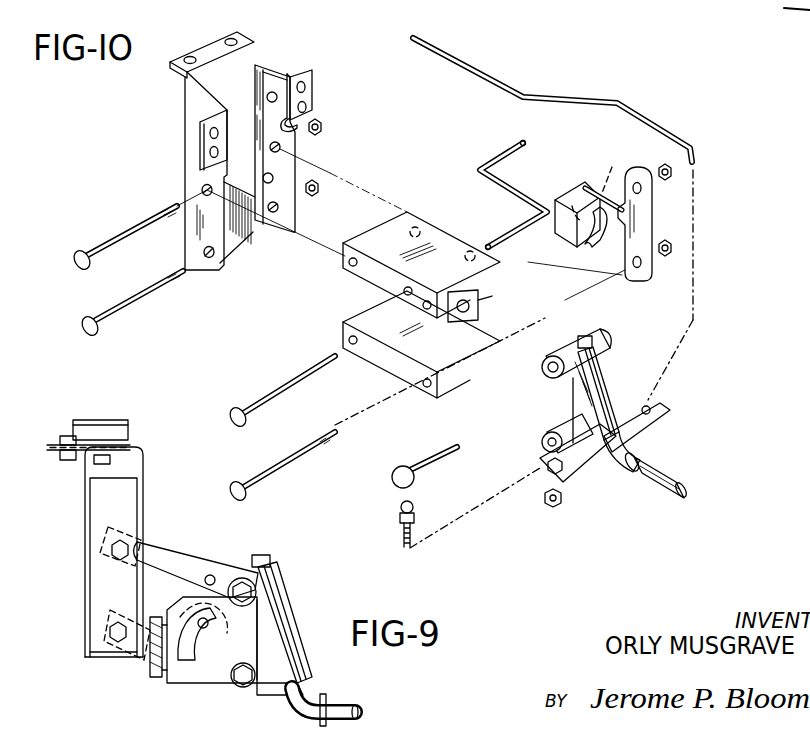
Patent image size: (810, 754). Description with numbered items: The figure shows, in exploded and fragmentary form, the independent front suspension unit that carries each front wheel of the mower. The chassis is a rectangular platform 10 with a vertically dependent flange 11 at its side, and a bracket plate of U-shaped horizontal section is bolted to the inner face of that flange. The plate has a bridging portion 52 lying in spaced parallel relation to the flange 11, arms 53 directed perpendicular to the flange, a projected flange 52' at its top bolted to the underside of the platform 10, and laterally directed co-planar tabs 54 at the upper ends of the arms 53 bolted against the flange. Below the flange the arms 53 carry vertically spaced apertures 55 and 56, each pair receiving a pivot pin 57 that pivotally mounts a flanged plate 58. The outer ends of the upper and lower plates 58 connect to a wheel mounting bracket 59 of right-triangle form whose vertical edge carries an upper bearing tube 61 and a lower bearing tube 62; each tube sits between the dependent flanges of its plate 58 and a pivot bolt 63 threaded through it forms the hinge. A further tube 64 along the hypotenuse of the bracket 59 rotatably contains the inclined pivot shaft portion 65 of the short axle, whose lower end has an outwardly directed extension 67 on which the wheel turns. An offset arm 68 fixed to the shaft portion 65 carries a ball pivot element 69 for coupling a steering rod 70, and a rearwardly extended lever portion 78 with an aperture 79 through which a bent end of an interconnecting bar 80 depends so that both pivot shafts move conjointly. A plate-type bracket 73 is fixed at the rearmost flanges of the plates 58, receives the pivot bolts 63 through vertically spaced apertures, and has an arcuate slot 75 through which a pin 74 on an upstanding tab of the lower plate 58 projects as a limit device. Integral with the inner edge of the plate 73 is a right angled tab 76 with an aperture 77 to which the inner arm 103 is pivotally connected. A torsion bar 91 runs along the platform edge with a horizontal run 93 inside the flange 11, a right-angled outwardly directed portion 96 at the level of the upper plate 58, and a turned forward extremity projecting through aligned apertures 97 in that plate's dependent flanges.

In FIG. 9, the platform 10 is at (140, 440).
In FIG. 9, the flange 11 is at (143, 470).
In FIG. 10, the bridging portion 52 is at (307, 137).
In FIG. 9, the bridging portion 52 is at (87, 612).
In FIG. 10, the projected flange 52' is at (212, 39).
In FIG. 9, the projected flange 52' is at (72, 464).
In FIG. 10, the arm 53 is at (187, 115).
In FIG. 9, the arm 53 is at (95, 568).
In FIG. 10, the tab 54 is at (312, 93).
In FIG. 10, the aperture 55 is at (203, 189).
In FIG. 10, the aperture 56 is at (281, 208).
In FIG. 10, the pivot pin 57 is at (138, 296).
In FIG. 9, the pivot pin 57 is at (108, 634).
In FIG. 10, the flanged plate 58 is at (395, 225).
In FIG. 9, the flanged plate 58 is at (198, 563).
In FIG. 10, the wheel mounting bracket 59 is at (565, 382).
In FIG. 10, the upper bearing tube 61 is at (610, 335).
In FIG. 10, the lower bearing tube 62 is at (560, 430).
In FIG. 10, the pivot bolt 63 is at (290, 458).
In FIG. 9, the pivot bolt 63 is at (240, 687).
In FIG. 10, the tube 64 is at (606, 374).
In FIG. 9, the tube 64 is at (296, 636).
In FIG. 10, the pivot shaft portion 65 is at (585, 336).
In FIG. 9, the pivot shaft portion 65 is at (268, 560).
In FIG. 10, the extension 67 is at (665, 482).
In FIG. 9, the extension 67 is at (340, 702).
In FIG. 10, the offset arm 68 is at (570, 480).
In FIG. 10, the ball pivot element 69 is at (413, 505).
In FIG. 10, the steering rod 70 is at (433, 457).
In FIG. 10, the plate-type bracket 73 is at (640, 232).
In FIG. 9, the plate-type bracket 73 is at (252, 620).
In FIG. 10, the pin 74 is at (480, 304).
In FIG. 9, the pin 74 is at (208, 627).
In FIG. 10, the arcuate slot 75 is at (597, 240).
In FIG. 9, the arcuate slot 75 is at (185, 678).
In FIG. 10, the right angled tab 76 is at (570, 195).
In FIG. 9, the right angled tab 76 is at (156, 660).
In FIG. 10, the aperture 77 is at (607, 178).
In FIG. 10, the lever portion 78 is at (655, 434).
In FIG. 10, the aperture 79 is at (650, 406).
In FIG. 10, the bar 80 is at (484, 70).
In FIG. 10, the torsion bar 91 is at (480, 157).
In FIG. 10, the horizontal run 93 is at (519, 141).
In FIG. 10, the outwardly directed portion 96 is at (518, 200).
In FIG. 9, the aperture 97 is at (214, 576).
In FIG. 9, the inner arm 103 is at (150, 682).